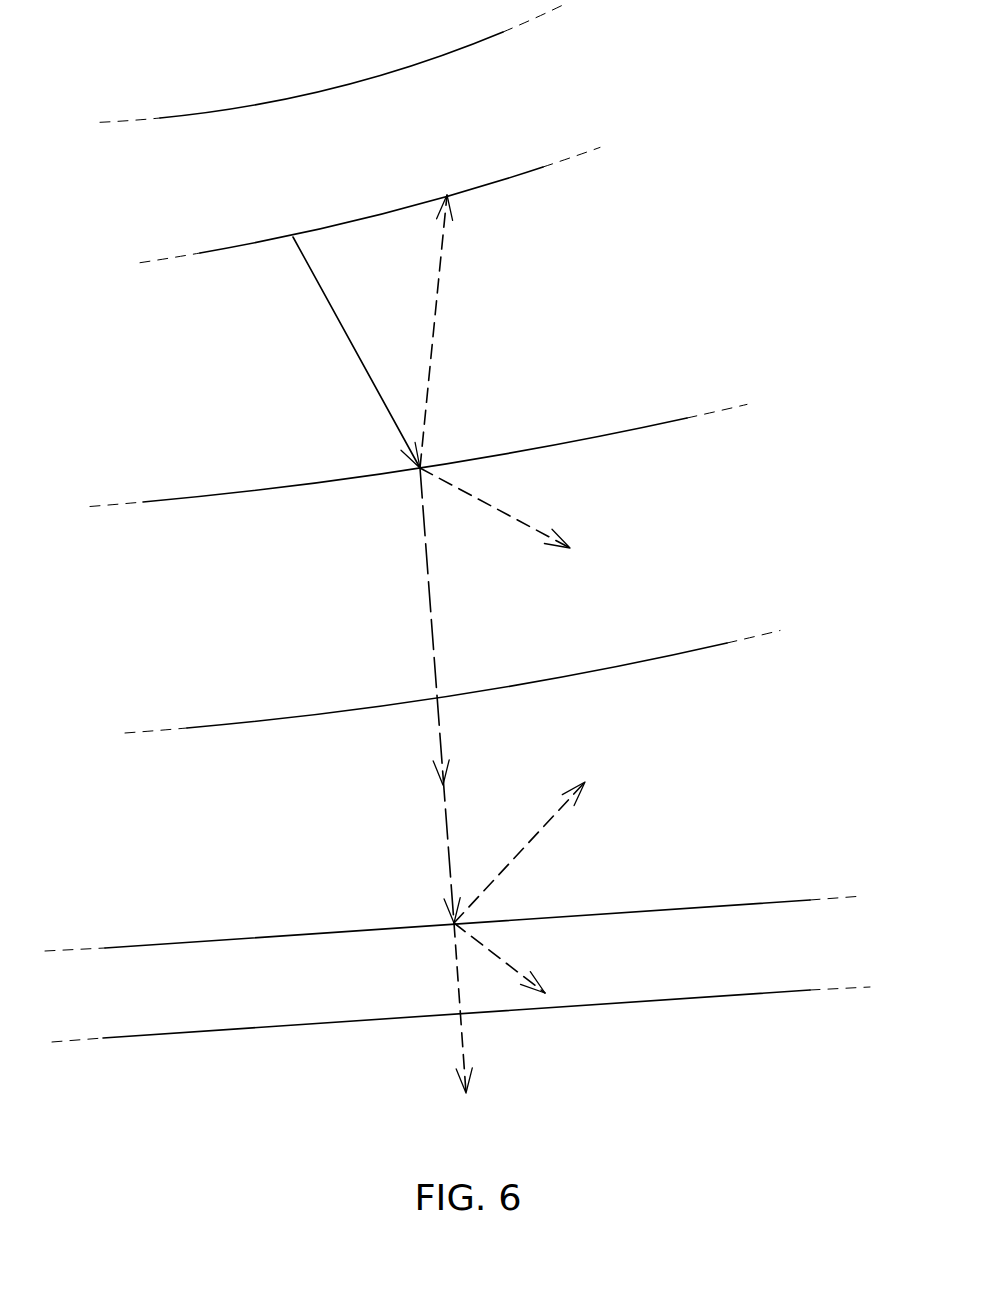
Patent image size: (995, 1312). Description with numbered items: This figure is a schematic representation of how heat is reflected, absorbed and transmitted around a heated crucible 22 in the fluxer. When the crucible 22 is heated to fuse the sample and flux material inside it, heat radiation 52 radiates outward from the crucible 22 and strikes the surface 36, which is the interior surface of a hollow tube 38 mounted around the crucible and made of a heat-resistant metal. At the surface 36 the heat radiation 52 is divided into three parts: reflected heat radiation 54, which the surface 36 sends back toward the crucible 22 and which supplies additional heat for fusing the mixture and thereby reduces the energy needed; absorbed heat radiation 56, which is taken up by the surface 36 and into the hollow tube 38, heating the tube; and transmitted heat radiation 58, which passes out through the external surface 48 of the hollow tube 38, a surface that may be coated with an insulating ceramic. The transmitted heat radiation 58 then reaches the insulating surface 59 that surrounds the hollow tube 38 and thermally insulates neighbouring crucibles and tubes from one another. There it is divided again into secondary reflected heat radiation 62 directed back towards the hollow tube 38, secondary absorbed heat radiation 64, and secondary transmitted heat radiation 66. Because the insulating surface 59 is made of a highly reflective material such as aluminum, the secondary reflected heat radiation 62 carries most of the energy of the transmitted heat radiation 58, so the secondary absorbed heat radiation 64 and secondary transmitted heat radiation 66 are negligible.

The crucible 22 is at (503, 105).
The surface 36 is at (594, 437).
The hollow tube 38 is at (676, 489).
The external surface 48 is at (643, 664).
The heat radiation 52 is at (347, 332).
The reflected heat radiation 54 is at (435, 317).
The absorbed heat radiation 56 is at (495, 512).
The transmitted heat radiation 58 is at (447, 830).
The insulating surface 59 is at (145, 945).
The secondary reflected heat radiation 62 is at (540, 830).
The secondary absorbed heat radiation 64 is at (512, 968).
The secondary transmitted heat radiation 66 is at (465, 1050).